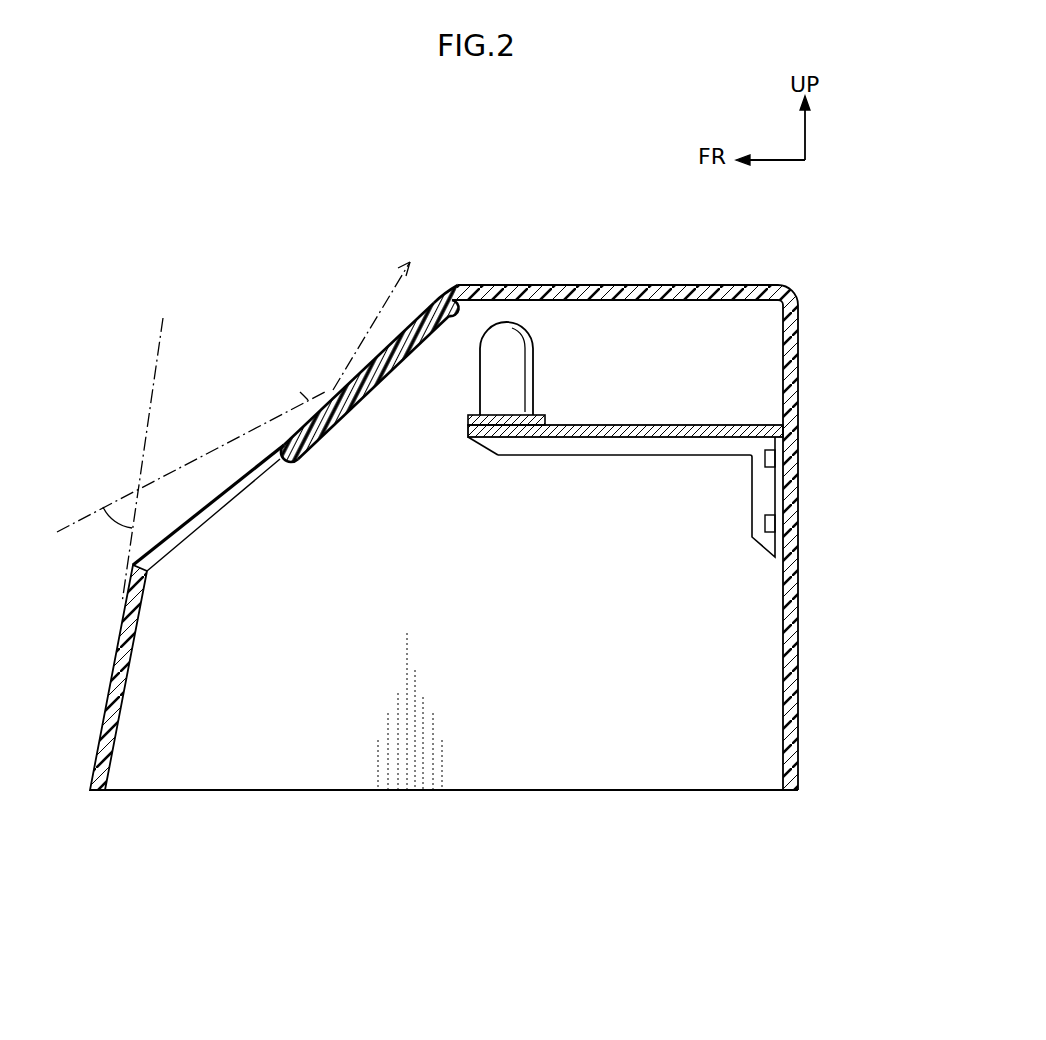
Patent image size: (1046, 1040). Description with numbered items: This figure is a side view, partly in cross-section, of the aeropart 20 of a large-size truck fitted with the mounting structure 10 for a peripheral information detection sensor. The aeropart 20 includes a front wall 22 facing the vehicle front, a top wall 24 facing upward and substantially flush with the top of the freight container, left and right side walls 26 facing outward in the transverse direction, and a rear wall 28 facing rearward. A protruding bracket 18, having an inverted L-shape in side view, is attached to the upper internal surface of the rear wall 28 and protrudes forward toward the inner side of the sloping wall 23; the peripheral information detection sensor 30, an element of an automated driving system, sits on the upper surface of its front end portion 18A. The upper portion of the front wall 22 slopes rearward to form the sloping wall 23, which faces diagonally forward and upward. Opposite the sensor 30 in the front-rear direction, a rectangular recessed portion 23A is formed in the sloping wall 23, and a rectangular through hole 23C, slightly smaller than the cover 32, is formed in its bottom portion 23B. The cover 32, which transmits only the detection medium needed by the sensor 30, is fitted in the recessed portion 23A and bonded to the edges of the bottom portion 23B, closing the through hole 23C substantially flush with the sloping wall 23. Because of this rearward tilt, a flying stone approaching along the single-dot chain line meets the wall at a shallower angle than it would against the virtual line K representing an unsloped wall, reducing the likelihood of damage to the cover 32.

The mounting structure 10 is at (337, 283).
The protruding bracket 18 is at (583, 457).
The front end portion 18A is at (468, 436).
The aeropart 20 is at (541, 282).
The front wall 22 is at (107, 677).
The sloping wall 23 is at (215, 514).
The recessed portion 23A is at (377, 378).
The bottom portion 23B is at (413, 303).
The through hole 23C is at (353, 407).
The top wall 24 is at (645, 285).
The side walls 26 is at (213, 752).
The rear wall 28 is at (800, 628).
The peripheral information detection sensor 30 is at (515, 372).
The cover 32 is at (327, 435).
The virtual line K is at (157, 338).